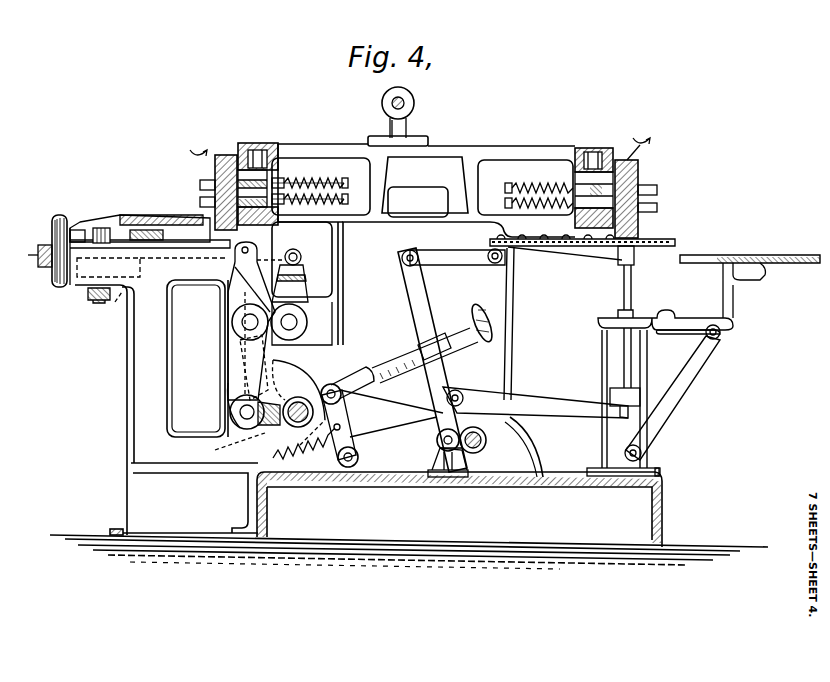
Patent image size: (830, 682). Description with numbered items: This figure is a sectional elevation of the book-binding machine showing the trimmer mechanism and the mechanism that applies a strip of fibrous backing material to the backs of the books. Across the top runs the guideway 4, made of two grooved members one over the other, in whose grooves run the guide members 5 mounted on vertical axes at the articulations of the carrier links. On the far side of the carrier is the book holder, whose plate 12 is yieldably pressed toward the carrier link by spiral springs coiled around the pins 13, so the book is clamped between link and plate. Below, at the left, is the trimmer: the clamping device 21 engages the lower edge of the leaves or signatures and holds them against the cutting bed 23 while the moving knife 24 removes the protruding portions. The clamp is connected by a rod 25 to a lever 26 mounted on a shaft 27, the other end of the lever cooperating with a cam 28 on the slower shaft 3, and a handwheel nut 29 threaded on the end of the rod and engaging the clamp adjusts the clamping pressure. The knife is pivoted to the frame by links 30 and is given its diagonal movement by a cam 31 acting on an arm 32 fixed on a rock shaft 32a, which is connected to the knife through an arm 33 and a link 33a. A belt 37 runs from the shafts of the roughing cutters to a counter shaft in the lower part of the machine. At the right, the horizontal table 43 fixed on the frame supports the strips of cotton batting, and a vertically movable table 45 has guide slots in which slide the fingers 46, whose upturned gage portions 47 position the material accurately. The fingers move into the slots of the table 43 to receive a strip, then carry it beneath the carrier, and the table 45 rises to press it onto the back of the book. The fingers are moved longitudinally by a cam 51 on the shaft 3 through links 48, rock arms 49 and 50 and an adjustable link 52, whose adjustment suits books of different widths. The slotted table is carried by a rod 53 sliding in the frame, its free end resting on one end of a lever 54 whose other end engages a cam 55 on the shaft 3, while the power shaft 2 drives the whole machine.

The power shaft 2 is at (484, 440).
The shaft 3 is at (298, 398).
The guideway 4 is at (250, 144).
The guide members 5 is at (265, 152).
The plate 12 is at (213, 173).
The pins 13 is at (307, 180).
The clamping device 21 is at (175, 225).
The cutting bed 23 is at (246, 240).
The moving knife 24 is at (210, 248).
The rod 25 is at (30, 255).
The lever 26 is at (300, 287).
The shaft 27 is at (289, 322).
The cam 28 is at (245, 435).
The handwheel nut 29 is at (58, 216).
The links 30 is at (108, 230).
The cam 31 is at (273, 453).
The arm 32 is at (233, 360).
The rock shaft 32a is at (232, 328).
The arm 33 is at (235, 293).
The link 33a is at (145, 253).
The belt 37 is at (410, 103).
The horizontal table 43 is at (790, 256).
The vertically movable table 45 is at (636, 256).
The fingers 46 is at (583, 248).
The gage portions 47 is at (640, 238).
The links 48 is at (440, 258).
The rock arm 49 is at (418, 313).
The rock arm 50 is at (433, 378).
The cam 51 is at (285, 378).
The adjustable link 52 is at (387, 355).
The rod 53 is at (631, 295).
The lever 54 is at (543, 405).
The cam 55 is at (297, 475).